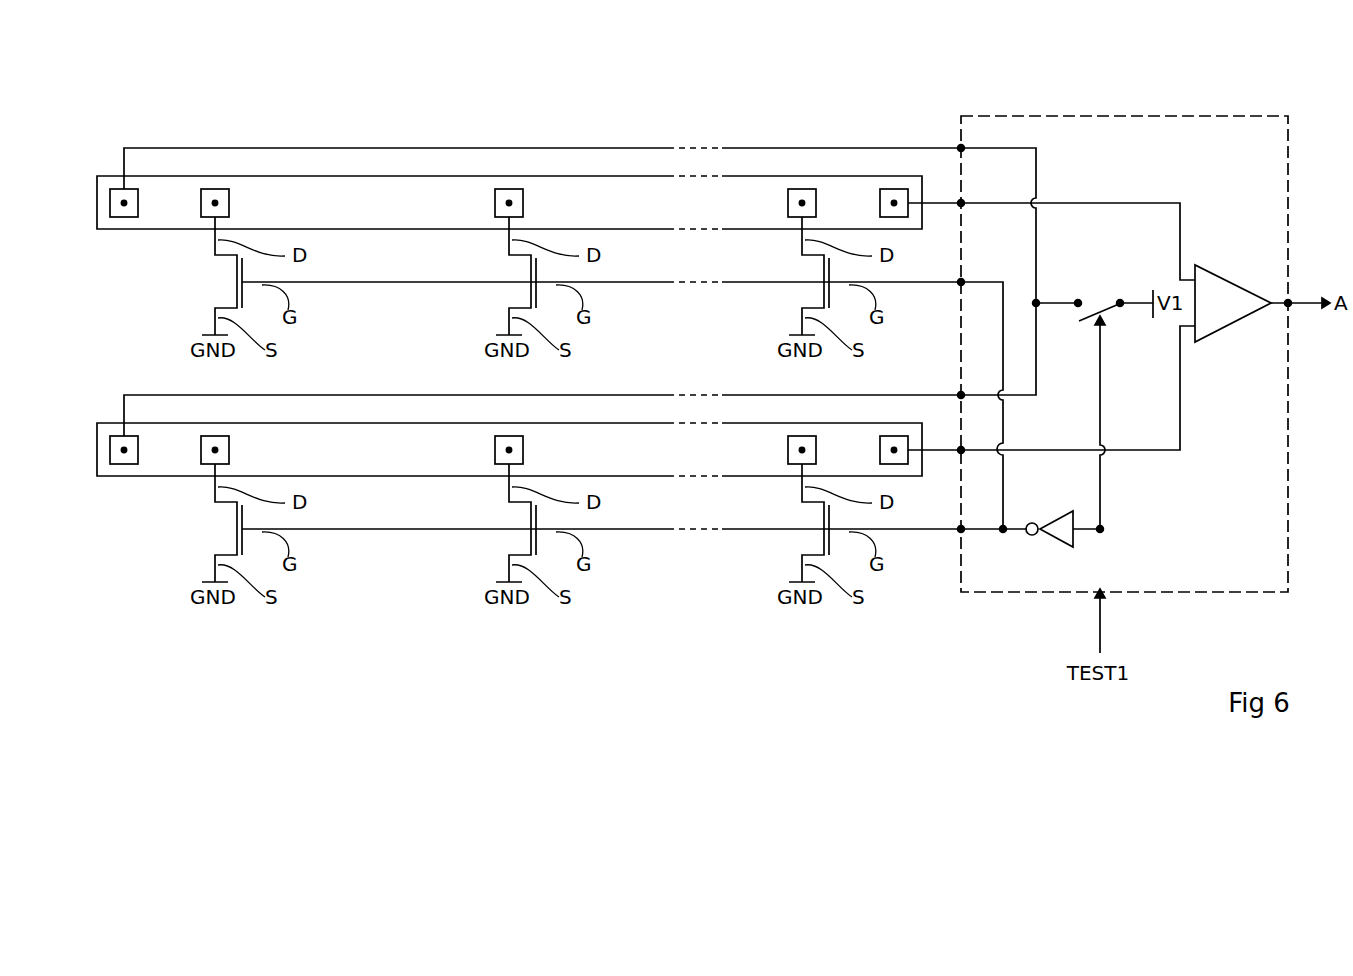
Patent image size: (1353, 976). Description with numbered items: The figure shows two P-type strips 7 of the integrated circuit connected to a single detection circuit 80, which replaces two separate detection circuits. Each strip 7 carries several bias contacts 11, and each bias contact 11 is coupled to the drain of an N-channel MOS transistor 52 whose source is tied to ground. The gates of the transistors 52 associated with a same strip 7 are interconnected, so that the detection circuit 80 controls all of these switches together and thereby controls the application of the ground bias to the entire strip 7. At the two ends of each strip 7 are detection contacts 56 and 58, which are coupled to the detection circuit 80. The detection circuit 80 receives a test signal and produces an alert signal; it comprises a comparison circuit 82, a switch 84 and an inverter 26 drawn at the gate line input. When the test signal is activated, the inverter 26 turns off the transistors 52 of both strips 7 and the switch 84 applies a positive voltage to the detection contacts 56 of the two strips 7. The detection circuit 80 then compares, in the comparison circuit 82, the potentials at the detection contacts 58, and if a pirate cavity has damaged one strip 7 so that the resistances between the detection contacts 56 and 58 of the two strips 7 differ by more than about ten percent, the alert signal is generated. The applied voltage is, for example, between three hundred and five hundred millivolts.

The strip 7 is at (170, 218).
The bias contact 11 is at (800, 437).
The inverter 26 is at (1048, 548).
The N-channel MOS transistor 52 is at (822, 525).
The detection contact 56 is at (106, 500).
The detection contact 58 is at (917, 500).
The detection circuit 80 is at (1052, 115).
The comparison circuit 82 is at (1223, 325).
The switch 84 is at (1098, 305).